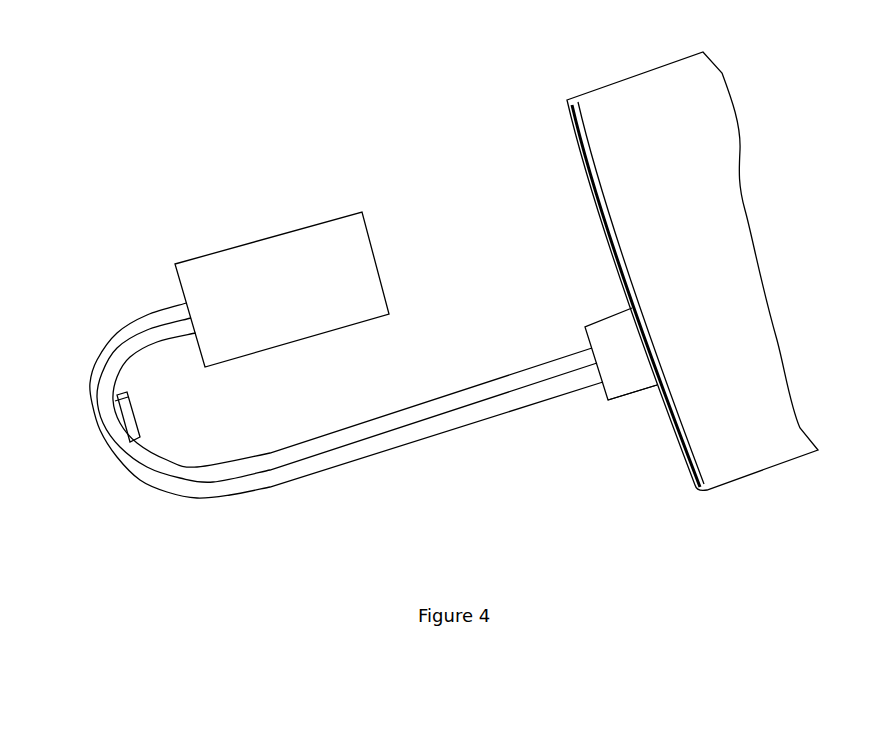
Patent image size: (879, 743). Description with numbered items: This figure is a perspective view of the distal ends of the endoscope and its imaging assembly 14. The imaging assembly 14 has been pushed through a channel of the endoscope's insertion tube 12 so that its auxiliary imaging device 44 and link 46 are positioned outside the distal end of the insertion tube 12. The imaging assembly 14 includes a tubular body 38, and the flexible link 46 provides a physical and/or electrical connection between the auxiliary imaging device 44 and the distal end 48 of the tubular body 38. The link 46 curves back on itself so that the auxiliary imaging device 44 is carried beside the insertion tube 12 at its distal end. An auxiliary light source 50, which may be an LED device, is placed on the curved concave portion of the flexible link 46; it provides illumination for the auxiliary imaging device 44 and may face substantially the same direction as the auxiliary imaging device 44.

The insertion tube 12 is at (631, 94).
The imaging assembly 14 is at (424, 118).
The tubular body 38 is at (613, 338).
The auxiliary imaging device 44 is at (244, 242).
The link 46 is at (432, 414).
The distal end of the tubular body 48 is at (609, 402).
The auxiliary light source 50 is at (127, 421).